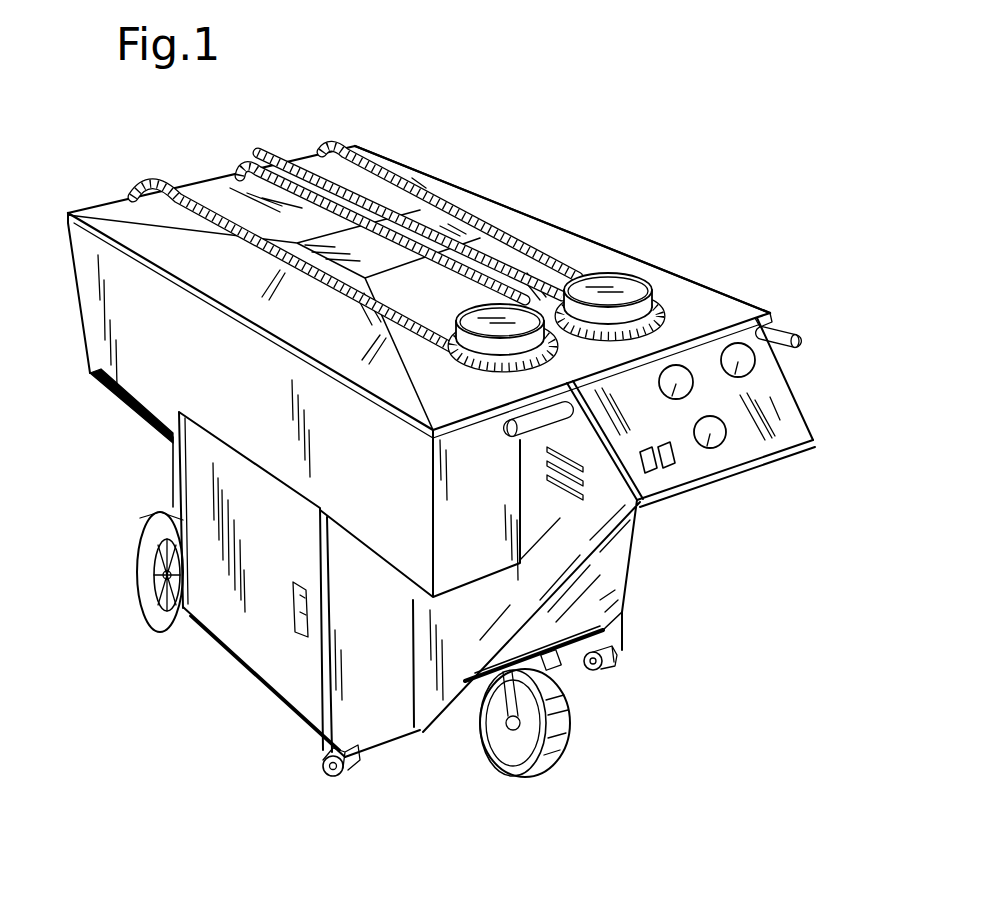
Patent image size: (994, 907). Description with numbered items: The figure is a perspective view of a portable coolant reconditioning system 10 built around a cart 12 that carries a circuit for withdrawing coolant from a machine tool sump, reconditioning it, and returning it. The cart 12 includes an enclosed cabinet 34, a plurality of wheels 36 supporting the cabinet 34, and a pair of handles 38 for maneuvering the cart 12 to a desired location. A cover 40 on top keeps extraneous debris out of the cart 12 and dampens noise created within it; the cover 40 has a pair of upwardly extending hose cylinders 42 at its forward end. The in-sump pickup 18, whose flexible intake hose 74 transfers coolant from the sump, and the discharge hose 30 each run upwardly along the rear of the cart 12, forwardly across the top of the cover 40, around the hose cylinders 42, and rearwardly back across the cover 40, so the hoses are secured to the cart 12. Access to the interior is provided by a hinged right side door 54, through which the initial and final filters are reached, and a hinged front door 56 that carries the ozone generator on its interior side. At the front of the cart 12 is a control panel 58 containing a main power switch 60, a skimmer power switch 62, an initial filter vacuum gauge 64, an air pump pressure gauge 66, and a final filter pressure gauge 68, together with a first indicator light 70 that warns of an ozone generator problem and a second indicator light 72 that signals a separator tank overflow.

The portable coolant reconditioning system 10 is at (592, 138).
The cart 12 is at (675, 265).
The in-sump pickup 18 is at (192, 192).
The discharge hose 30 is at (410, 183).
The enclosed cabinet 34 is at (370, 752).
The wheels 36 is at (147, 573).
The handles 38 is at (777, 352).
The cover 40 is at (612, 250).
The hose cylinders 42 is at (570, 278).
The right side door 54 is at (238, 648).
The front door 56 is at (622, 603).
The control panel 58 is at (720, 478).
The main power switch 60 is at (648, 473).
The skimmer power switch 62 is at (668, 467).
The initial filter vacuum gauge 64 is at (722, 470).
The air pump pressure gauge 66 is at (725, 345).
The final filter pressure gauge 68 is at (680, 364).
The first indicator light 70 is at (727, 437).
The second indicator light 72 is at (756, 424).
The intake hose 74 is at (227, 226).